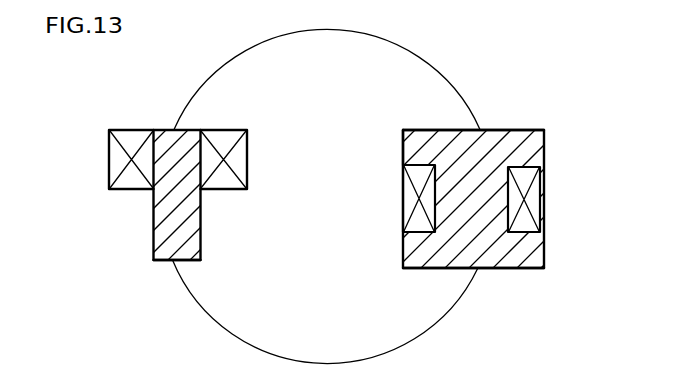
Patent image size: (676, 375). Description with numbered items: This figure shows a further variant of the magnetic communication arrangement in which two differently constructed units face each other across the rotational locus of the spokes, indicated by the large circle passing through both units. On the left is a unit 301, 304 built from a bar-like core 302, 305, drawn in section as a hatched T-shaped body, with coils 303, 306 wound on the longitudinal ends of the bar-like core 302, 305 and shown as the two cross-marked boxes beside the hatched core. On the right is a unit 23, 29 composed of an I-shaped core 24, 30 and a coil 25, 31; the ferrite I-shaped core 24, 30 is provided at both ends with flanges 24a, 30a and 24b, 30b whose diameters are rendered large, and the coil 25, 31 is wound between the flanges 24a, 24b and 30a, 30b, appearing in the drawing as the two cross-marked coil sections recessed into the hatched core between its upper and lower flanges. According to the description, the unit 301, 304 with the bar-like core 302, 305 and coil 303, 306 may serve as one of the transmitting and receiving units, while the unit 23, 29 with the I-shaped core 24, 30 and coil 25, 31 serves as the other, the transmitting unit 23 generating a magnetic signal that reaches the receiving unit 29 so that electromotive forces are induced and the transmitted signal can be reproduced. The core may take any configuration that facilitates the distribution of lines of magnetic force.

The transmitting unit 301 is at (225, 187).
The receiving unit 304 is at (203, 220).
The coil 303 is at (175, 157).
The coil 306 is at (108, 140).
The bar-like core 302 is at (159, 282).
The bar-like core 305 is at (158, 261).
The ferrite I-shaped core 24 is at (423, 187).
The ferrite I-shaped core 30 is at (546, 146).
The flange 24a is at (404, 129).
The flange 30a is at (409, 129).
The transmitting unit 23 is at (475, 110).
The receiving unit 29 is at (495, 127).
The flange 24b is at (466, 285).
The flange 30b is at (411, 268).
The coil 25 is at (466, 198).
The coil 31 is at (402, 190).